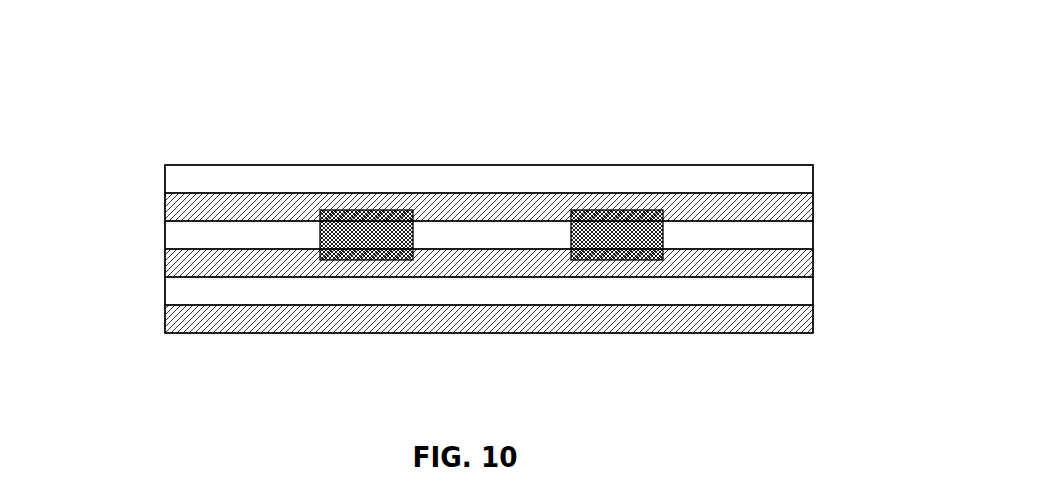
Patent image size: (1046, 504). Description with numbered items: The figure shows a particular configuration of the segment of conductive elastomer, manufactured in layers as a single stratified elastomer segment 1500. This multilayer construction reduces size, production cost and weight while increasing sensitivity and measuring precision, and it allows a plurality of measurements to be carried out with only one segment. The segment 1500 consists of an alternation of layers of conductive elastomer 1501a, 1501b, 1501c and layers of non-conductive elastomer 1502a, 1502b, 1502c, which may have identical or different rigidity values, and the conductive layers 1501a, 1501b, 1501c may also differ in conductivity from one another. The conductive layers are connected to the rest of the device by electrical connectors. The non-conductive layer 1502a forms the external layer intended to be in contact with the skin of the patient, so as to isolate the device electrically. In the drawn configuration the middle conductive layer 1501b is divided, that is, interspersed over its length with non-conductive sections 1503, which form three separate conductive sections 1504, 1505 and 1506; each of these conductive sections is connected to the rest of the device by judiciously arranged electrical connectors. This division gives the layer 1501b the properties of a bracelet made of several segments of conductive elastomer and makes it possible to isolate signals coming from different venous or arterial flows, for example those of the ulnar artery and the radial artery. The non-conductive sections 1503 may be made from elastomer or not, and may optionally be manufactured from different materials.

The stratified elastomer segment 1500 is at (732, 143).
The layer of conductive elastomer 1501a is at (793, 290).
The layer of conductive elastomer 1501b is at (793, 232).
The layer of conductive elastomer 1501c is at (793, 178).
The layer of non-conductive elastomer 1502a is at (200, 318).
The layer of non-conductive elastomer 1502b is at (200, 262).
The layer of non-conductive elastomer 1502c is at (202, 207).
The non-conductive sections 1503 is at (610, 207).
The conductive section 1504 is at (246, 233).
The conductive section 1505 is at (508, 233).
The conductive section 1506 is at (702, 233).